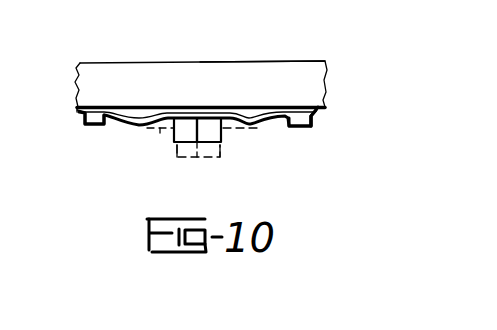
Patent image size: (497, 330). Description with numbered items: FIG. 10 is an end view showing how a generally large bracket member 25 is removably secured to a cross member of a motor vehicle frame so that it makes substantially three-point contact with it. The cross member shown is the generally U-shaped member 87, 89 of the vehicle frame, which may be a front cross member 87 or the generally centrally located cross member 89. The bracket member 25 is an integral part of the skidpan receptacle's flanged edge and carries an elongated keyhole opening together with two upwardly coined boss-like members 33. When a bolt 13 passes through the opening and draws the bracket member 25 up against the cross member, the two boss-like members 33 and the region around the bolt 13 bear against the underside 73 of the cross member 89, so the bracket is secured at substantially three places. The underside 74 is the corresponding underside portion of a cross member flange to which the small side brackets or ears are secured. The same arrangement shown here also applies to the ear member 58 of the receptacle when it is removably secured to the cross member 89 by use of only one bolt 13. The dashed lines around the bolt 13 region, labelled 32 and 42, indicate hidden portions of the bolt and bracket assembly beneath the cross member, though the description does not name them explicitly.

The cross member 87 is at (115, 70).
The cross member 89 is at (291, 73).
The underside 73 is at (80, 113).
The coined boss-like members 33 is at (84, 116).
The bracket member 25 is at (129, 127).
The web 32 is at (160, 134).
The bolt 13 is at (188, 145).
The fastener 42 is at (214, 160).
The ear member 58 is at (263, 128).
The underside 74 is at (312, 119).